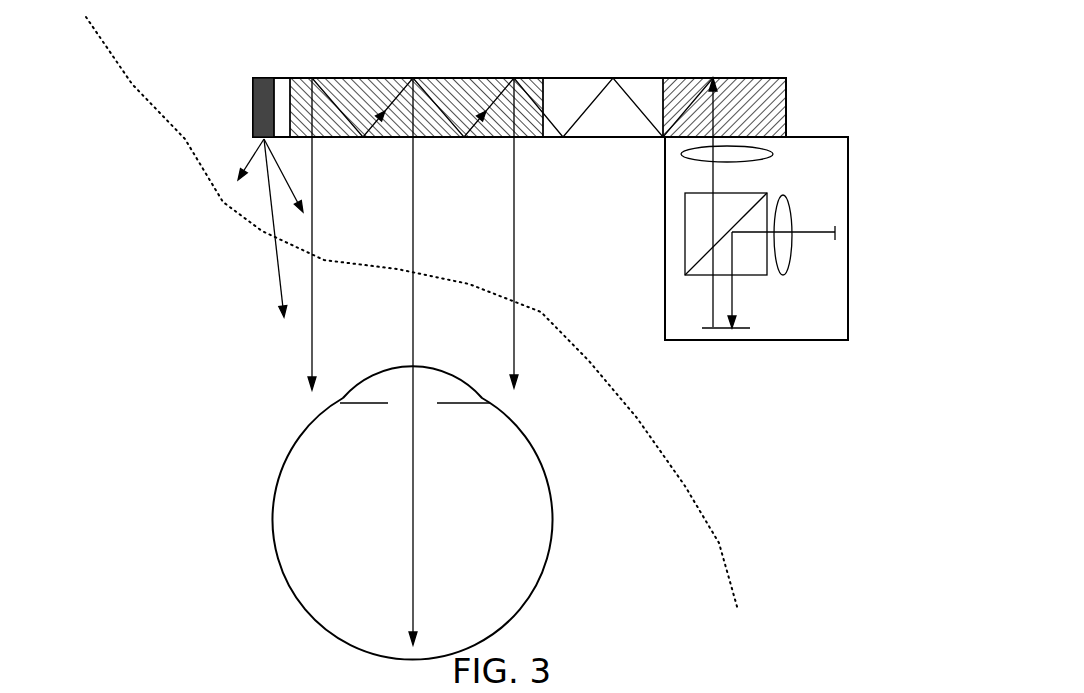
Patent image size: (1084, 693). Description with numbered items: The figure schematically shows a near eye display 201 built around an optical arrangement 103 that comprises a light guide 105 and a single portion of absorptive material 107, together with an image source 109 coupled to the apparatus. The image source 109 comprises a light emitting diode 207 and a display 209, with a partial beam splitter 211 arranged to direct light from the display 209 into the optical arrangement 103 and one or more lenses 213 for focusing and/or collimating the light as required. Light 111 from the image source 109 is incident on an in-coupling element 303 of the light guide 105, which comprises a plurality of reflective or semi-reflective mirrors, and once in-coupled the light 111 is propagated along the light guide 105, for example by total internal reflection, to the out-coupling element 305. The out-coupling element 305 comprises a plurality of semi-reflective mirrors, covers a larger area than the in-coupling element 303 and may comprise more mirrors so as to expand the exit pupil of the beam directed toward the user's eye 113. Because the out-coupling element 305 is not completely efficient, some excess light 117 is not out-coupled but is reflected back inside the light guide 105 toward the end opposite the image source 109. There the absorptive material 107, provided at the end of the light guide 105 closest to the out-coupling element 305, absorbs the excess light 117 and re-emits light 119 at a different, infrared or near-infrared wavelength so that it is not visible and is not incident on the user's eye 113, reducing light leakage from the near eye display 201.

The light guide 105 is at (787, 118).
The absorptive material 107 is at (262, 80).
The excess light 117 is at (280, 112).
The out-coupling element 305 is at (402, 78).
The optical arrangement 103 is at (549, 140).
The light 111 is at (641, 125).
The in-coupling element 303 is at (787, 80).
The re-emitted light 119 is at (263, 205).
The near eye display 201 is at (212, 64).
The user's eye 113 is at (556, 507).
The image source 109 is at (835, 340).
The lenses 213 is at (773, 154).
The partial beam splitter 211 is at (699, 252).
The light emitting diode 207 is at (838, 233).
The display 209 is at (731, 338).